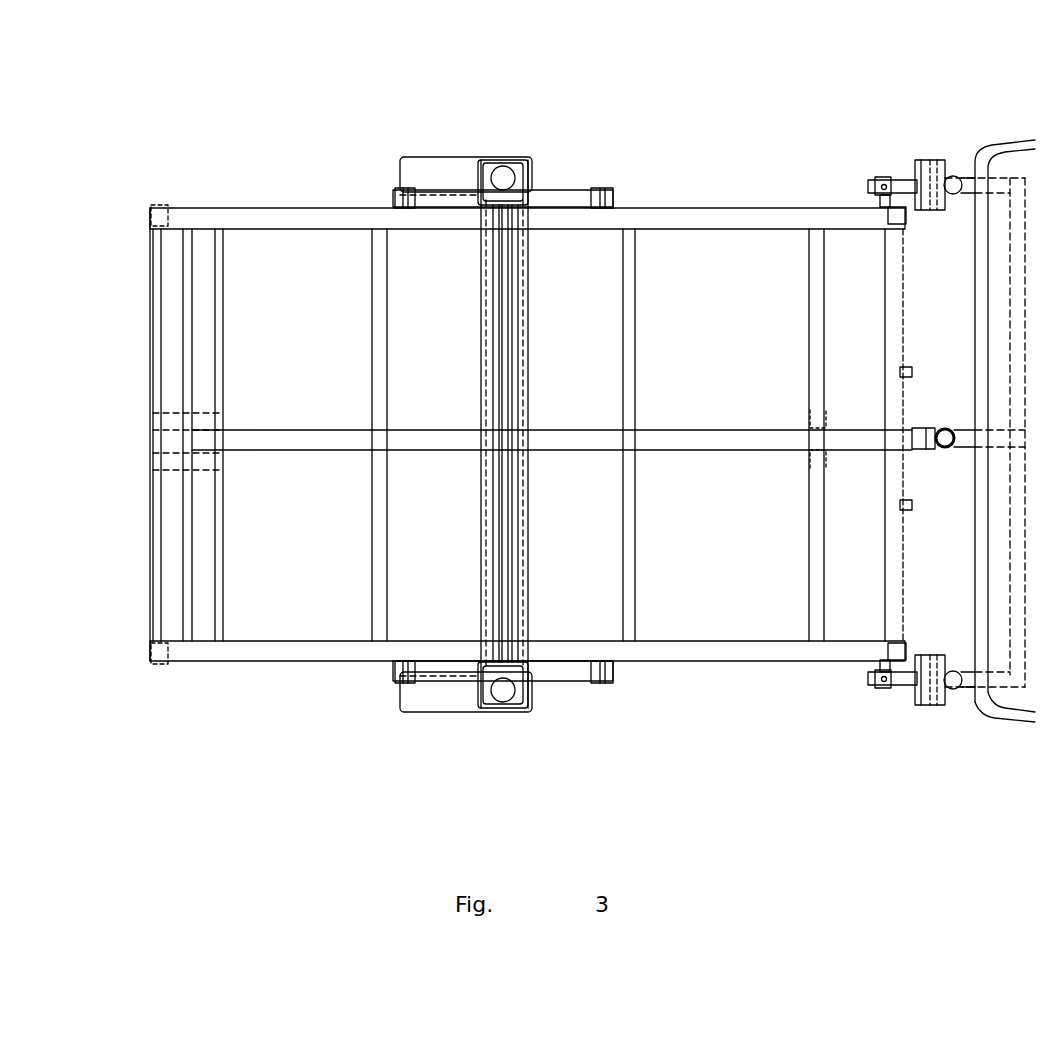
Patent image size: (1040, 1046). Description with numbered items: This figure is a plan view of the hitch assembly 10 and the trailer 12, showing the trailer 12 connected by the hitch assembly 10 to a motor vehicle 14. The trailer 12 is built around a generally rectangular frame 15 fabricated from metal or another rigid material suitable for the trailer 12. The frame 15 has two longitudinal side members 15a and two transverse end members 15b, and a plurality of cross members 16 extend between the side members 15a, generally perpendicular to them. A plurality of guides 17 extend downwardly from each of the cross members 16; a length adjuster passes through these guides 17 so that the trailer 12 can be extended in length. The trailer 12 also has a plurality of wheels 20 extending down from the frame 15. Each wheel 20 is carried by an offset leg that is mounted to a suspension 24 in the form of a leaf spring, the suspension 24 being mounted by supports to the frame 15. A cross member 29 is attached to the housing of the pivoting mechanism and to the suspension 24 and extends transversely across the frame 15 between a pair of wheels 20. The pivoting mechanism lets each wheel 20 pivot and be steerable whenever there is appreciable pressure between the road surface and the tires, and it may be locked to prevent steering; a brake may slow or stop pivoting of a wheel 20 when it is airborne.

The hitch assembly 10 is at (944, 408).
The trailer 12 is at (709, 177).
The motor vehicle 14 is at (987, 125).
The frame 15 is at (204, 208).
The longitudinal side members 15a is at (290, 212).
The transverse end members 15b is at (160, 578).
The cross members 16 is at (188, 578).
The guides 17 is at (200, 420).
The wheels 20 is at (430, 165).
The suspension 24 is at (572, 190).
The cross member 29 is at (513, 480).